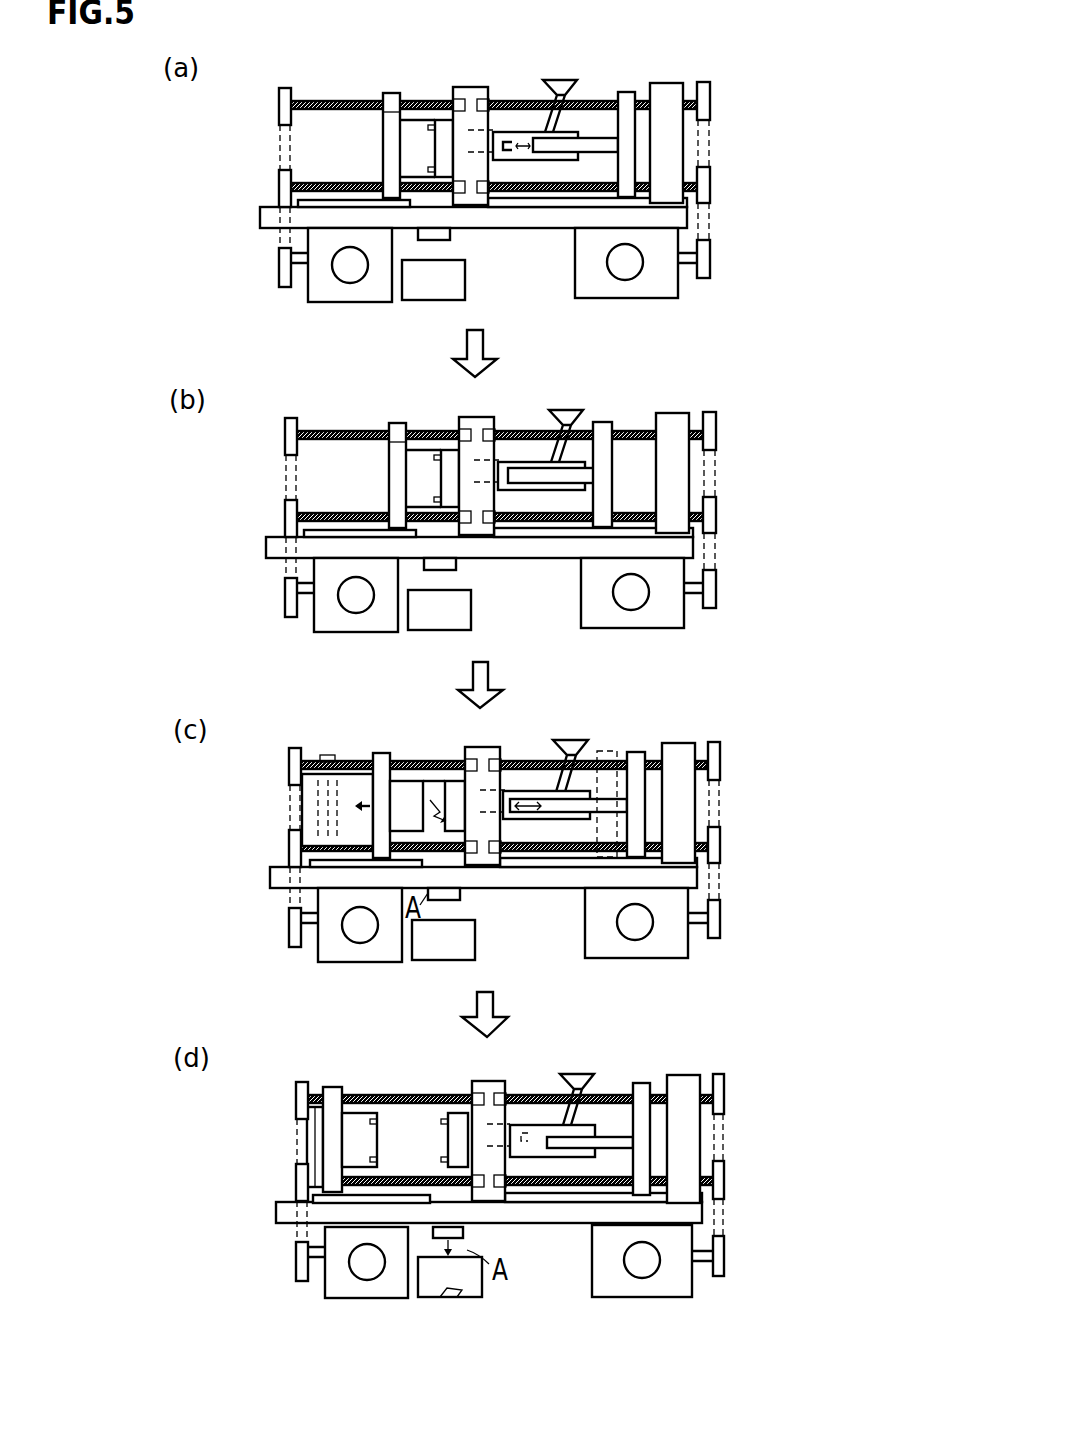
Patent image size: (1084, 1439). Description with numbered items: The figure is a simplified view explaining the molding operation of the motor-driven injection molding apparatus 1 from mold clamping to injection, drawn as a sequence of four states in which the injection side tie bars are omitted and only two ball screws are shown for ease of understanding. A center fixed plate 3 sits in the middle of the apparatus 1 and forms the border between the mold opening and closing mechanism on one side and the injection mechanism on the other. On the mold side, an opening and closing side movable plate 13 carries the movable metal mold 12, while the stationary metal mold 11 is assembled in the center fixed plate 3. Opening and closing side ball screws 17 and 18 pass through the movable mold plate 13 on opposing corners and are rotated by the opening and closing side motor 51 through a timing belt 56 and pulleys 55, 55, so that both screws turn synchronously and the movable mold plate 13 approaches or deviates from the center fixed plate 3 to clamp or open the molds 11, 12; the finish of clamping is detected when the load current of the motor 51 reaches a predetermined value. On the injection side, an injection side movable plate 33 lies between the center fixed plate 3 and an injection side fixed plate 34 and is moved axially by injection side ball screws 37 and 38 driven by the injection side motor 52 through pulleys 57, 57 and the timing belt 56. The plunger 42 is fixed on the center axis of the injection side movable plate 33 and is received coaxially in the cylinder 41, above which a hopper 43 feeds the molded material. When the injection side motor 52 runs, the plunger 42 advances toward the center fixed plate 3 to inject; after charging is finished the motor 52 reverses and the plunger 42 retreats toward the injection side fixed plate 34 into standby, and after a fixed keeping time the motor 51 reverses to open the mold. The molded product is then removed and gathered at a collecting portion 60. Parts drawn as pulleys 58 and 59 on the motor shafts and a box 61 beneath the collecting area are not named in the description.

The motor-driven injection molding apparatus 1 is at (766, 74).
The center fixed plate 3 is at (472, 87).
The stationary metal mold 11 is at (444, 121).
The movable metal mold 12 is at (413, 120).
The opening and closing side movable plate 13 is at (388, 94).
The opening and closing side ball screw 17 is at (383, 112).
The opening and closing side ball screw 18 is at (305, 199).
The injection side movable plate 33 is at (606, 92).
The injection side fixed plate 34 is at (666, 83).
The injection side ball screw 37 is at (522, 101).
The injection side ball screw 38 is at (520, 207).
The cylinder 41 is at (582, 132).
The plunger 42 is at (558, 152).
The hopper 43 is at (562, 80).
The opening and closing side motor 51 is at (312, 293).
The injection side motor 52 is at (680, 285).
The pulley 55 is at (282, 185).
The timing belt 56 is at (294, 138).
The pulley 57 is at (707, 108).
The drive pulley 58 is at (279, 260).
The drive pulley 59 is at (708, 262).
The collecting portion 60 is at (446, 239).
The product receiving box 61 is at (420, 295).